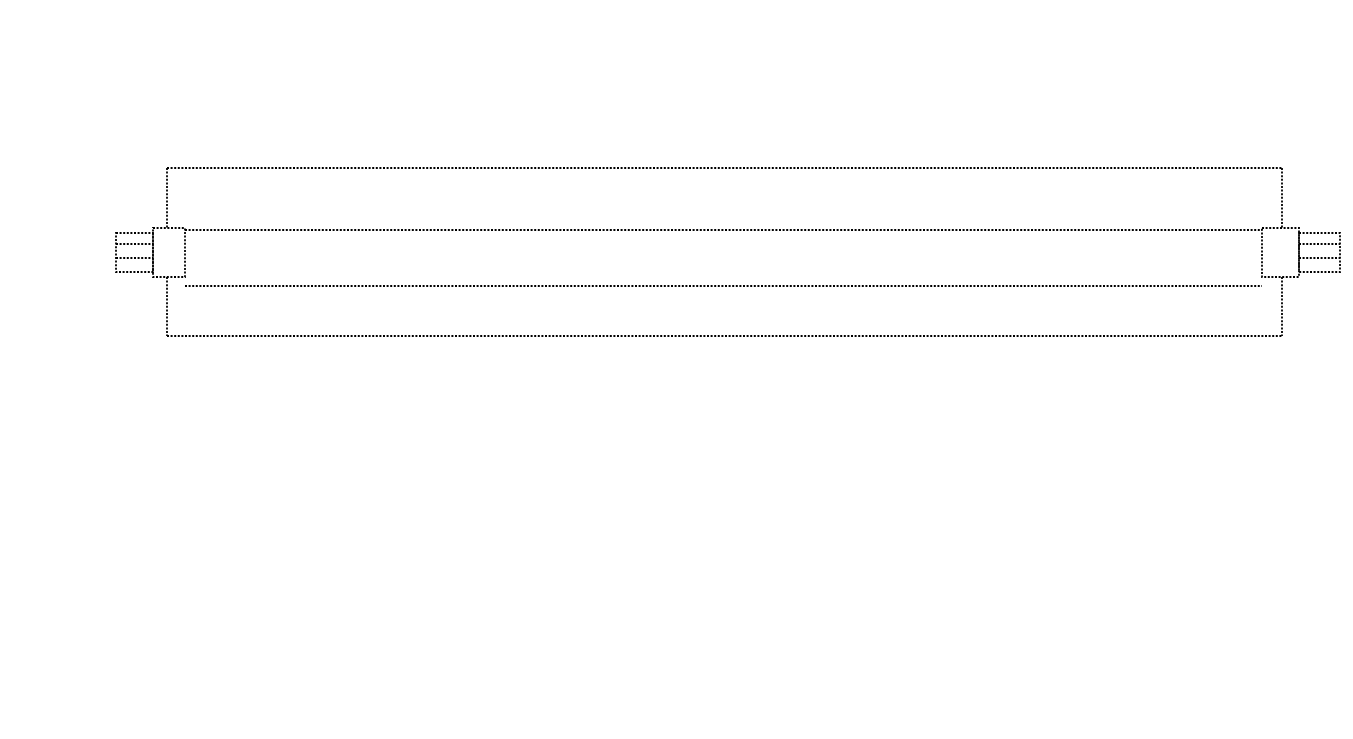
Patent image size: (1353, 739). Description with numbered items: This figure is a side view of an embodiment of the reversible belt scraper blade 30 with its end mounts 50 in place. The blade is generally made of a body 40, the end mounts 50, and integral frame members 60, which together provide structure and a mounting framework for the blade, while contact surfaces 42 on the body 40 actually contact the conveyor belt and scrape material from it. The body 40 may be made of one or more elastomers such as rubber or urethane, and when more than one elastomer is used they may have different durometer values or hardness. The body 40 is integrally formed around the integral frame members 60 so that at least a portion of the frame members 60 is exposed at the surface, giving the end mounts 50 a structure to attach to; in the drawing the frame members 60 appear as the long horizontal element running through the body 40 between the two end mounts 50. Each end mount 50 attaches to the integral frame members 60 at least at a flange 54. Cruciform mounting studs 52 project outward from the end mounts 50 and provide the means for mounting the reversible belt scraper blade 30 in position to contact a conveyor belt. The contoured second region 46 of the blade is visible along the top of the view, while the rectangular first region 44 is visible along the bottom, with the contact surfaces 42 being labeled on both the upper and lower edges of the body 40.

The reversible belt scraper blade 30 is at (877, 98).
The body 40 is at (1282, 337).
The contact surfaces 42 is at (752, 167).
The rectangular first region 44 is at (572, 313).
The contoured second region 46 is at (585, 182).
The end mounts 50 is at (137, 208).
The cruciform mounting studs 52 is at (116, 237).
The flange 54 is at (177, 273).
The integral frame members 60 is at (400, 267).